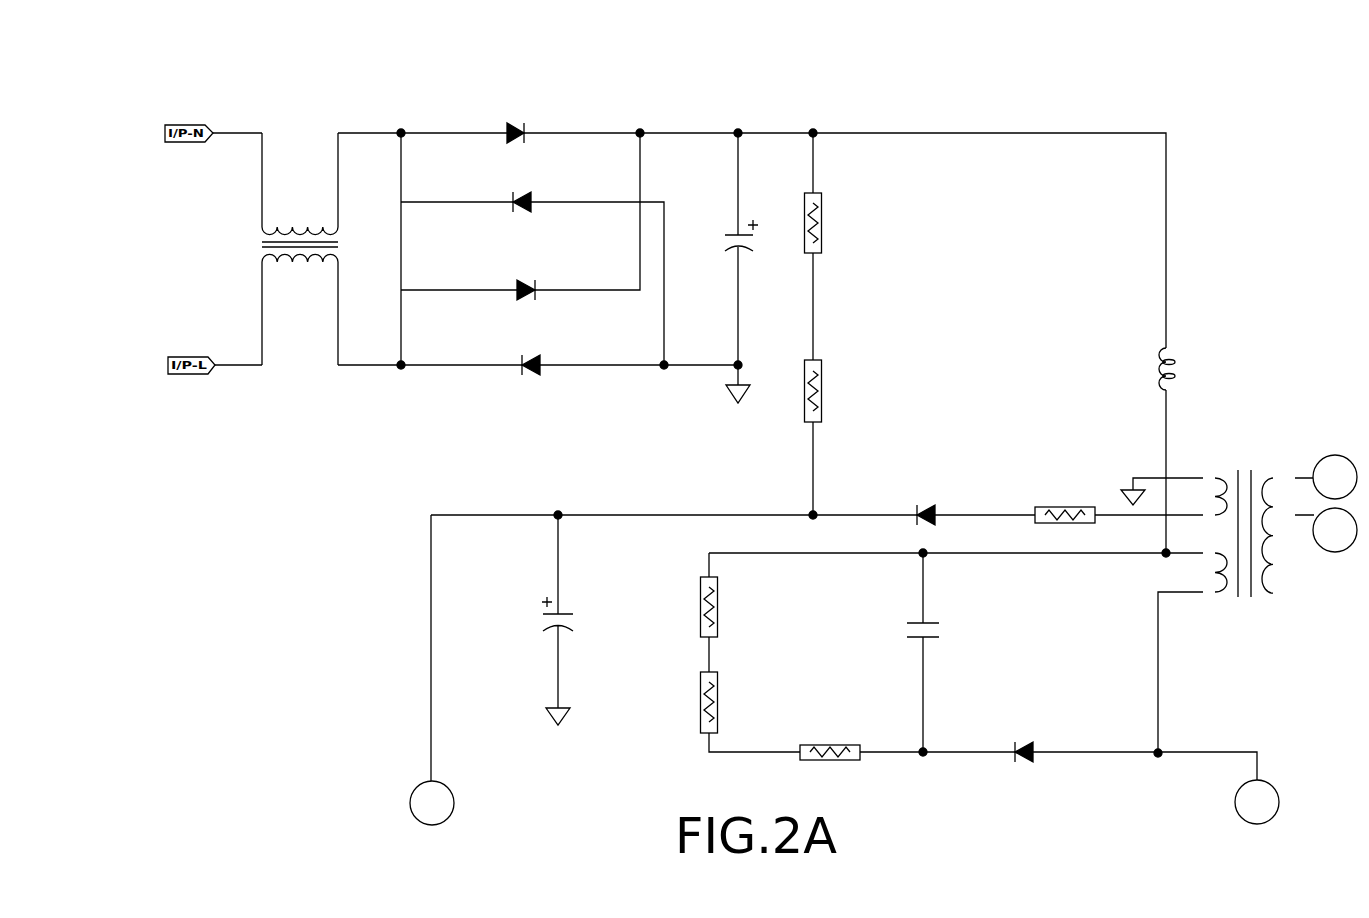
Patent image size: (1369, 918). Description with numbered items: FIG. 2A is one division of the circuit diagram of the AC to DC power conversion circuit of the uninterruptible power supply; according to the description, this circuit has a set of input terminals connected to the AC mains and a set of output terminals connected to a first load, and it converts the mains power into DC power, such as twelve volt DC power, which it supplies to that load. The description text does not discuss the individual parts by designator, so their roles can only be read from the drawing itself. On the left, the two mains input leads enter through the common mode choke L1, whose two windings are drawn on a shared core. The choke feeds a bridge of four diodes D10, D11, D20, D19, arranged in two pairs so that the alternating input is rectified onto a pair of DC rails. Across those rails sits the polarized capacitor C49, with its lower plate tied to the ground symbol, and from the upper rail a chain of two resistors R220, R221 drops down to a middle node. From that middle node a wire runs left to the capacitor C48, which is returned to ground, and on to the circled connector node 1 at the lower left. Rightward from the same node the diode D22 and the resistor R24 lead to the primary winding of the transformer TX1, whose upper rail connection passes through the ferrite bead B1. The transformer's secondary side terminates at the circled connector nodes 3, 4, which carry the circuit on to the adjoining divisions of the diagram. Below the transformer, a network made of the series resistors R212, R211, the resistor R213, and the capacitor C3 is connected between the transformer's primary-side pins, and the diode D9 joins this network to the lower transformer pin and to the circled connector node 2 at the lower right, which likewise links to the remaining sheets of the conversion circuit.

The common mode choke 15mH L1 is at (297, 249).
The rectifier diode 1N4007 D10 is at (510, 109).
The rectifier diode 1N4007 D11 is at (527, 201).
The rectifier diode 1N4007 D20 is at (523, 288).
The rectifier diode 1N4007 D19 is at (533, 367).
The bulk capacitor 10U/400V C49 is at (712, 268).
The resistor 499K SMF(1206) R220 is at (838, 246).
The resistor 499K SMF(1206) R221 is at (790, 426).
The diode UF1010 D22 is at (932, 488).
The resistor 10ohm SMF(1206) R24 is at (1066, 515).
The ferrite bead B1 is at (1162, 450).
The transformer EE16P08 TX1 is at (1258, 533).
The capacitor 47U/50V C48 is at (556, 620).
The resistor 100K SMF(1206) R212 is at (733, 623).
The resistor 100K SMF(1206) R211 is at (686, 713).
The resistor 100K SMF(1206) R213 is at (818, 729).
The capacitor 102K/1KV C3 is at (919, 652).
The diode 1N4007 D9 is at (1028, 753).
The circuit node connector 1 is at (432, 803).
The circuit node connector 2 is at (1257, 802).
The circuit node connector 3 is at (1335, 477).
The circuit node connector 4 is at (1335, 530).